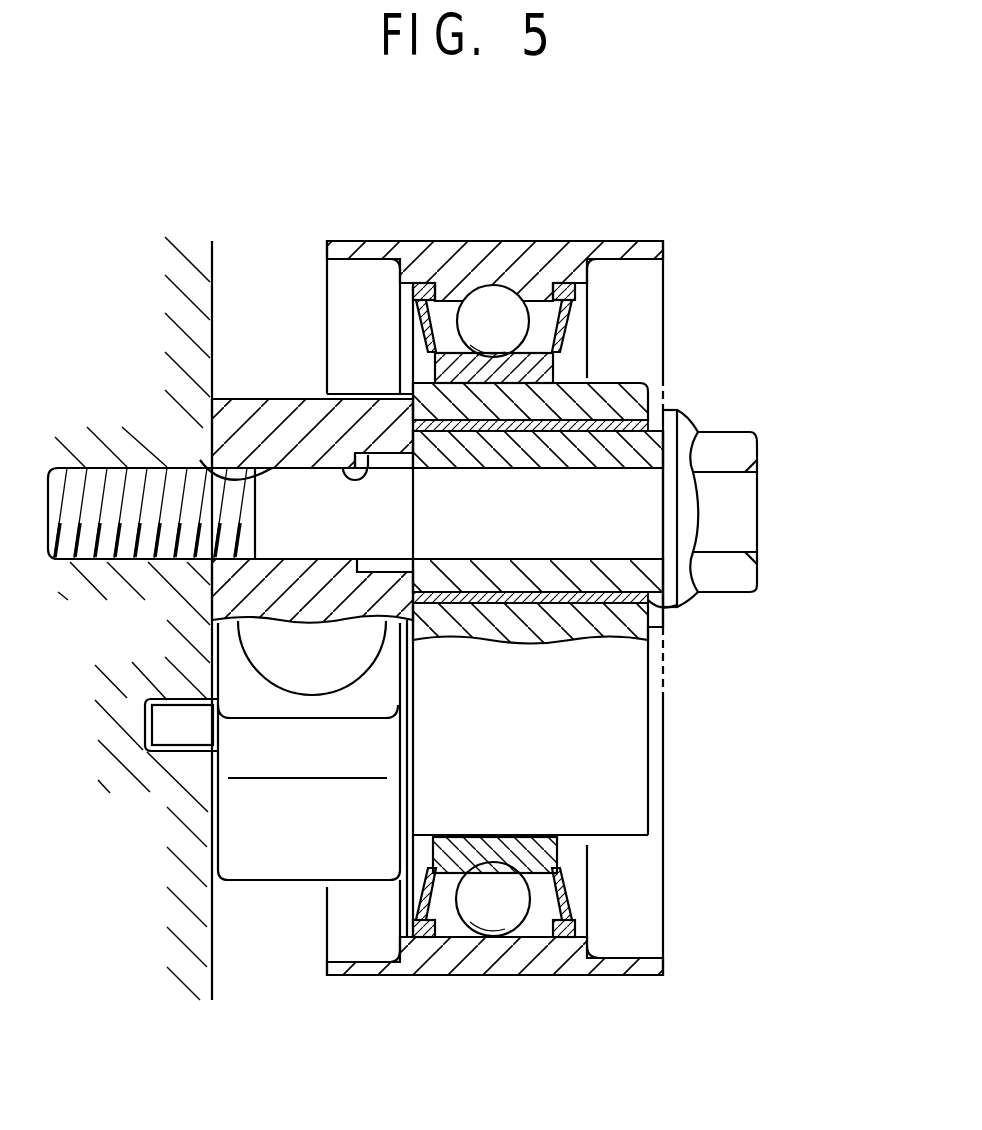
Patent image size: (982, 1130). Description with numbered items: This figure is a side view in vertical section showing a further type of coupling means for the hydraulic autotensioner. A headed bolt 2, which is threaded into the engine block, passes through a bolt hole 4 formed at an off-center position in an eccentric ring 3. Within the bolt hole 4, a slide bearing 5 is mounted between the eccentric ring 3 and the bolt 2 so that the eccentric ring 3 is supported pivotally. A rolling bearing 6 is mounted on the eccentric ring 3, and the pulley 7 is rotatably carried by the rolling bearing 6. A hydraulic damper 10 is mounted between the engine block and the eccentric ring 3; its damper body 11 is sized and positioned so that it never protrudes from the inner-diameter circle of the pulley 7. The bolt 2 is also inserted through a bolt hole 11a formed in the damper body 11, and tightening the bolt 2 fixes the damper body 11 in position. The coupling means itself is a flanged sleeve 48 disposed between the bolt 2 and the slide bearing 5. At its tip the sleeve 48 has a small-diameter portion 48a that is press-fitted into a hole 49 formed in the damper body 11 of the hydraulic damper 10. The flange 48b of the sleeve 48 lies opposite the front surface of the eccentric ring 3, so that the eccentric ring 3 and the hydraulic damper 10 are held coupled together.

The headed bolt 2 is at (634, 508).
The eccentric ring 3 is at (612, 392).
The bolt hole 4 is at (590, 397).
The slide bearing 5 is at (650, 398).
The rolling bearing 6 is at (492, 298).
The pulley 7 is at (443, 253).
The hydraulic damper 10 is at (229, 794).
The damper body 11 is at (228, 740).
The bolt hole 11a is at (158, 417).
The flanged sleeve 48 is at (634, 452).
The small-diameter portion 48a is at (385, 455).
The flange 48b is at (660, 600).
The hole 49 is at (338, 467).